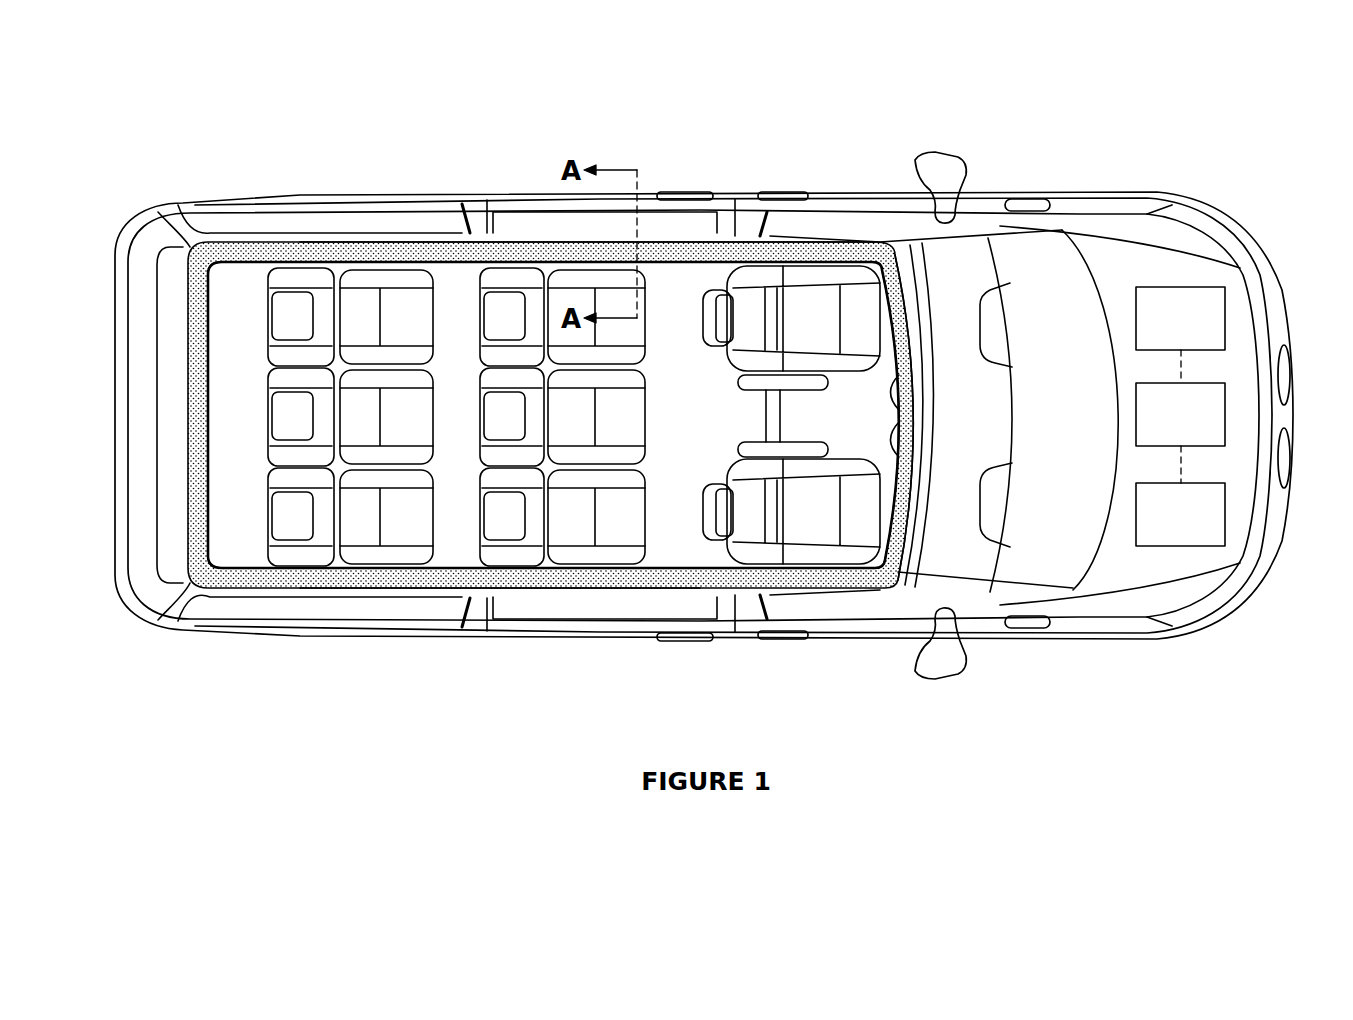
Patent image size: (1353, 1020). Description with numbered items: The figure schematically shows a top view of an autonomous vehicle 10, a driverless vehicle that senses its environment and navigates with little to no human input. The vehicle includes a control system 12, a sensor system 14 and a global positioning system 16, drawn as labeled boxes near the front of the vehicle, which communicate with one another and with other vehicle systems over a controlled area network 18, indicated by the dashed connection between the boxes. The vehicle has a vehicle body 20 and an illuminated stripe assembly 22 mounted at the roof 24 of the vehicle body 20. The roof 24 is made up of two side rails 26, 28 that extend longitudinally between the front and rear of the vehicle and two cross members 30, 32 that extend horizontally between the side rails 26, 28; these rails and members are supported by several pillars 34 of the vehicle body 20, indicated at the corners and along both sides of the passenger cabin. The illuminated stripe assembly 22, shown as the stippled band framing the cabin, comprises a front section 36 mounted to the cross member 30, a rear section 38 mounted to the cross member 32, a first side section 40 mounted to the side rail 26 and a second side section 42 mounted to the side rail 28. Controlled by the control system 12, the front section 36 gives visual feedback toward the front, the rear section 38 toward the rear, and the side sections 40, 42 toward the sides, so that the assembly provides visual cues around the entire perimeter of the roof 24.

The autonomous vehicle 10 is at (163, 115).
The control system 12 is at (1226, 400).
The sensor system 14 is at (1226, 514).
The global positioning system (GPS) 16 is at (1226, 322).
The controlled area network (CAN) 18 is at (1200, 465).
The vehicle body 20 is at (543, 205).
The illuminated stripe assembly 22 is at (826, 232).
The roof 24 is at (445, 238).
The side rail 26 is at (650, 235).
The side rail 28 is at (533, 588).
The cross member 30 is at (927, 414).
The cross member 32 is at (183, 437).
The pillar 34 is at (184, 218).
The front section 36 is at (905, 320).
The rear section 38 is at (211, 408).
The first side section 40 is at (265, 270).
The second side section 42 is at (235, 566).